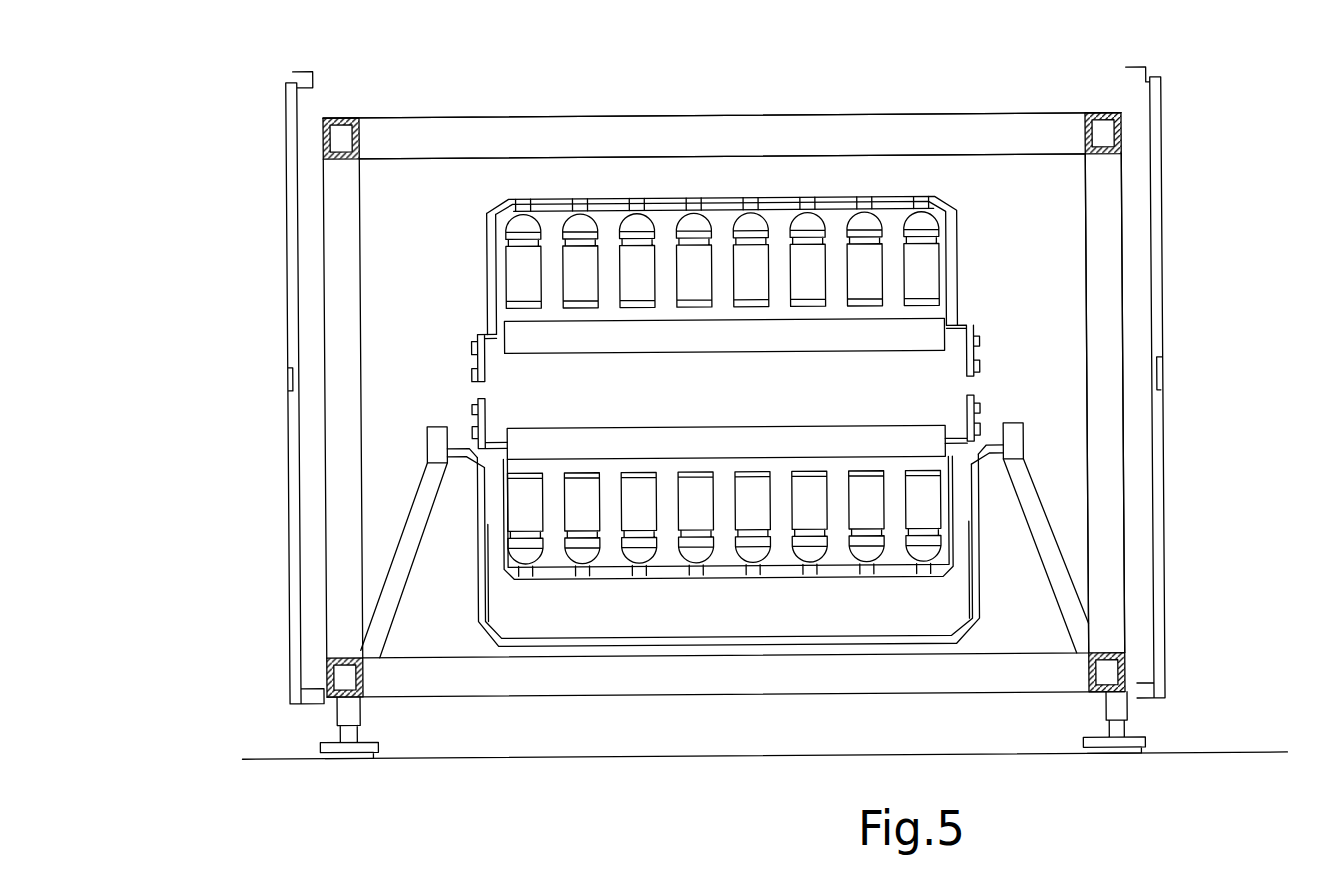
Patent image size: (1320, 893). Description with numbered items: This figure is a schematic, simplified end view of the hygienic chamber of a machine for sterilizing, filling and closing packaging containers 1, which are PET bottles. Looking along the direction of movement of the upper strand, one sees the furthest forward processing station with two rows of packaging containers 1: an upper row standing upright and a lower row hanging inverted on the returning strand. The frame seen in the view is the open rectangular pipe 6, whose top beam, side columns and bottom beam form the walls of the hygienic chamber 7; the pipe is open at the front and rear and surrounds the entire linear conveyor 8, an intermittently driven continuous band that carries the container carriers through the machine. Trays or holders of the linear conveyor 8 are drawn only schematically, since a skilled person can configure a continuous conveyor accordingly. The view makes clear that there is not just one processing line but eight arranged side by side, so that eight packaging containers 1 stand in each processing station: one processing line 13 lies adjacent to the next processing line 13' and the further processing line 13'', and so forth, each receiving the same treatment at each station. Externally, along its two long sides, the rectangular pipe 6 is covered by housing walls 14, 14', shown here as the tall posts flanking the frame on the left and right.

The packaging container 1 is at (580, 508).
The rectangular pipe 6 is at (433, 142).
The hygienic chamber 7 is at (1035, 185).
The linear conveyor 8 is at (993, 356).
The processing line 13 is at (581, 294).
The processing line 13' is at (727, 166).
The processing line 13'' is at (864, 165).
The housing wall 14 is at (243, 388).
The housing wall 14' is at (1204, 382).